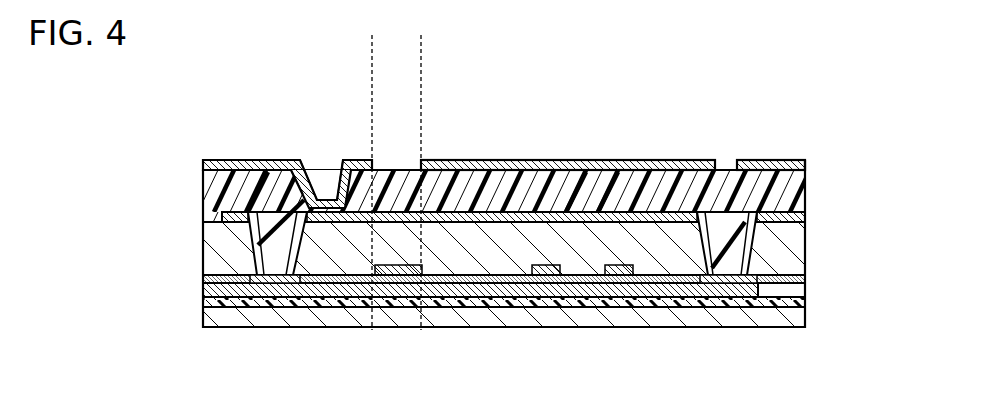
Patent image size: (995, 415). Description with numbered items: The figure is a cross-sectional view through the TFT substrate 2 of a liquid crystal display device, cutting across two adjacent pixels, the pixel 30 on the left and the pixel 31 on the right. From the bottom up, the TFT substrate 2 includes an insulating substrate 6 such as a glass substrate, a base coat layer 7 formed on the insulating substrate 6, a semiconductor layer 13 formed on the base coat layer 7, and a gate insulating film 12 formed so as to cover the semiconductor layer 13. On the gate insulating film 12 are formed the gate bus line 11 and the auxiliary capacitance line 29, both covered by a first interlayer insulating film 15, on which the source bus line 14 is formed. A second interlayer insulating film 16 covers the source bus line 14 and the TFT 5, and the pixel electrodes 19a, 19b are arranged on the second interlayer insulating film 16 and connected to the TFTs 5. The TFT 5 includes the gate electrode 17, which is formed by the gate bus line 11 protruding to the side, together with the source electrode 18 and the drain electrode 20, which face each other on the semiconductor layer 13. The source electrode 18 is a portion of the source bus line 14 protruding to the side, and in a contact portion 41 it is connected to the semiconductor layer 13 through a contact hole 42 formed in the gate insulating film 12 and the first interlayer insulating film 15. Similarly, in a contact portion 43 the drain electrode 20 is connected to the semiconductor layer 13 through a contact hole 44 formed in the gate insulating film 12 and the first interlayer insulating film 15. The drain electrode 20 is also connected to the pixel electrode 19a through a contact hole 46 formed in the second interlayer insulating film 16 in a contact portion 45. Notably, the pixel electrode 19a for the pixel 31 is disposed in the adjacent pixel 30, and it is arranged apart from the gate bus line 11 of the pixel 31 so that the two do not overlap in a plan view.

The TFT substrate 2 is at (783, 85).
The TFT 5 is at (574, 265).
The insulating substrate 6 is at (806, 325).
The base coat layer 7 is at (806, 301).
The gate bus line 11 is at (617, 276).
The gate insulating film 12 is at (806, 280).
The semiconductor layer 13 is at (663, 290).
The source bus line 14 is at (770, 162).
The first interlayer insulating film 15 is at (806, 246).
The second interlayer insulating film 16 is at (806, 197).
The gate electrode 17 is at (547, 276).
The source electrode 18 is at (707, 284).
The pixel electrode 19a is at (211, 158).
The pixel electrode 19b is at (641, 160).
The drain electrode 20 is at (262, 284).
The auxiliary capacitance line 29 is at (399, 276).
The pixel 30 is at (280, 60).
The pixel 31 is at (612, 60).
The contact portion 41 is at (726, 238).
The contact hole 42 is at (752, 277).
The contact portion 43 is at (257, 180).
The contact hole 44 is at (247, 236).
The contact portion 45 is at (326, 192).
The contact hole 46 is at (306, 176).